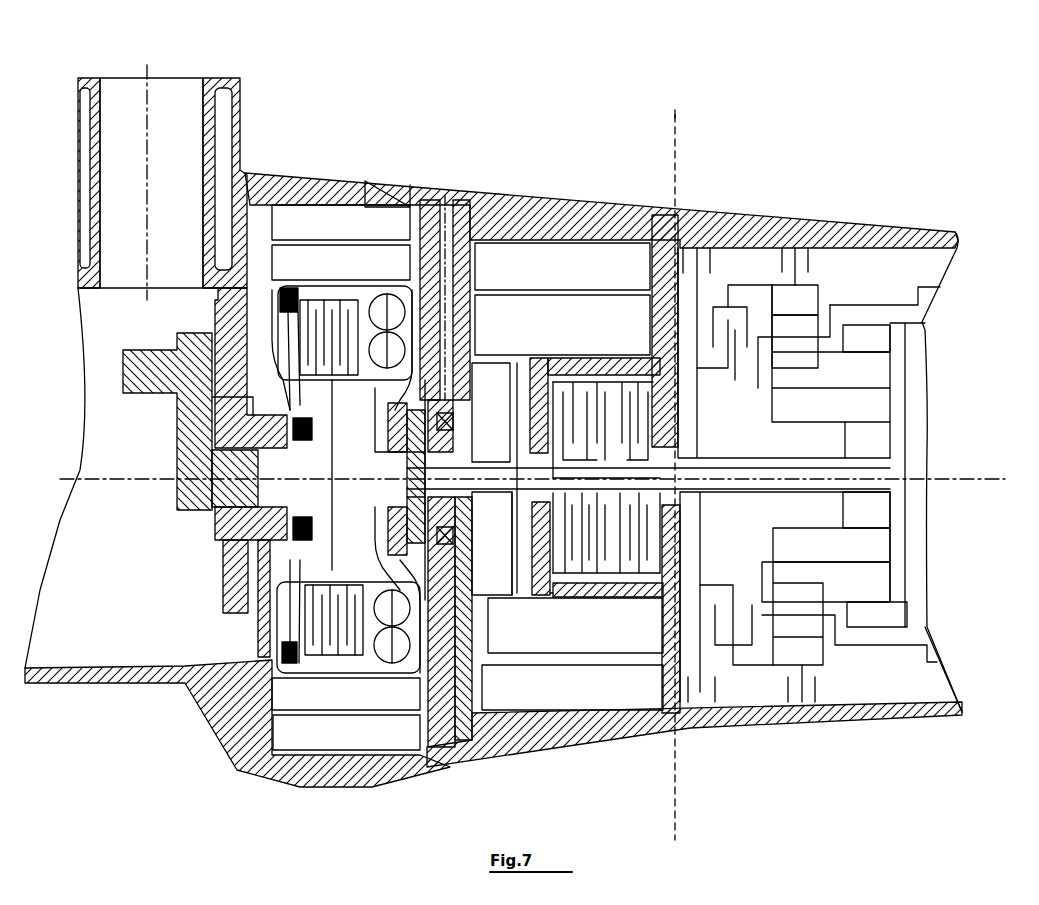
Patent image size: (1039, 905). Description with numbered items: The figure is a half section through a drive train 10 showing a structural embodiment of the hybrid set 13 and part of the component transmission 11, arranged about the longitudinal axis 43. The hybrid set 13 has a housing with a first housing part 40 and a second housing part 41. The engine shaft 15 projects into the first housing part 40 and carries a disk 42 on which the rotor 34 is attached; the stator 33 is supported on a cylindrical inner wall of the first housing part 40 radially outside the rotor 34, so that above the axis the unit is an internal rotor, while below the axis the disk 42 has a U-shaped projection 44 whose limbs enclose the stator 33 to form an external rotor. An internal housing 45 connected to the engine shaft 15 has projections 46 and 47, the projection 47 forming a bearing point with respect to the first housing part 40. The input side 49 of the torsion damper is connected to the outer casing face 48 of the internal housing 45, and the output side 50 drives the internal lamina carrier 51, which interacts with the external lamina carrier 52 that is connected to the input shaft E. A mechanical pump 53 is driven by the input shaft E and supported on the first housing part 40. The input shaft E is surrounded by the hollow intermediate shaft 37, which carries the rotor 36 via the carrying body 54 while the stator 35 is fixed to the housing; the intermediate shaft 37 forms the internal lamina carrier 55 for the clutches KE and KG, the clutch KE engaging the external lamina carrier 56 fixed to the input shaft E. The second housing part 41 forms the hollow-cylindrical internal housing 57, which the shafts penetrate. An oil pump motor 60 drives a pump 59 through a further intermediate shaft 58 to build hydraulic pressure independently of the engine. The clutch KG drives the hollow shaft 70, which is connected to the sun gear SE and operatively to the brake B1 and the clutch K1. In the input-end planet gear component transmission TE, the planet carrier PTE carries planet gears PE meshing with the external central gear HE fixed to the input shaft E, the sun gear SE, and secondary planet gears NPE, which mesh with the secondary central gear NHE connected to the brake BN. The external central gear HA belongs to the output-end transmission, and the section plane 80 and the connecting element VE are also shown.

The drive train 10 is at (600, 85).
The component transmission 11 is at (843, 125).
The hybrid set 13 is at (445, 120).
The engine shaft 15 is at (190, 498).
The stator 33 is at (285, 230).
The rotor 34 is at (290, 262).
The stator 35 is at (517, 265).
The rotor 36 is at (505, 245).
The intermediate shaft 37 is at (516, 500).
The first housing part 40 is at (430, 240).
The second housing part 41 is at (535, 245).
The disk 42 is at (213, 397).
The longitudinal axis 43 is at (978, 476).
The U-shaped projection 44 is at (432, 700).
The internal housing 45 is at (426, 655).
The projection 46 is at (228, 560).
The projection 47 is at (455, 600).
The outer casing face 48 is at (387, 295).
The input side 49 is at (360, 300).
The output side 50 is at (220, 447).
The internal lamina carrier 51 is at (328, 302).
The external lamina carrier 52 is at (265, 605).
The mechanical pump 53 is at (245, 520).
The carrying body 54 is at (500, 500).
The internal lamina carrier 55 is at (612, 350).
The external lamina carrier 56 is at (570, 500).
The internal housing 57 is at (680, 577).
The intermediate shaft 58 is at (480, 555).
The pump 59 is at (500, 320).
The oil pump motor 60 is at (487, 390).
The hollow shaft 70 is at (700, 458).
The section plane 80 is at (672, 105).
The brake B1 is at (690, 260).
The brake BN is at (790, 250).
The input shaft E is at (367, 482).
The external central gear HA is at (922, 322).
The external central gear HE is at (868, 335).
The clutch K1 is at (737, 345).
The clutch KE is at (582, 378).
The clutch KG is at (636, 378).
The external secondary central gear NHE is at (807, 297).
The secondary planet gears NPE is at (810, 320).
The planet gears PE is at (880, 380).
The planet carrier PTE is at (760, 390).
The internal central gear SE is at (853, 435).
The input-end planet gear component transmission TE is at (888, 675).
The connecting element VE is at (935, 290).